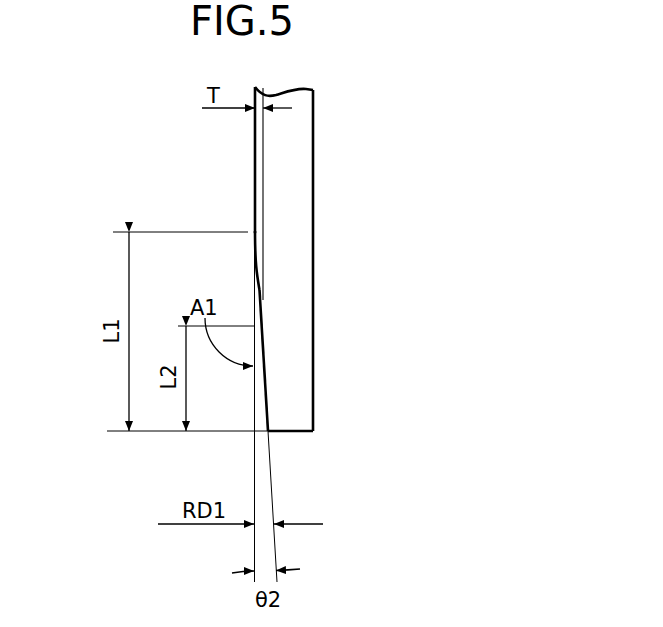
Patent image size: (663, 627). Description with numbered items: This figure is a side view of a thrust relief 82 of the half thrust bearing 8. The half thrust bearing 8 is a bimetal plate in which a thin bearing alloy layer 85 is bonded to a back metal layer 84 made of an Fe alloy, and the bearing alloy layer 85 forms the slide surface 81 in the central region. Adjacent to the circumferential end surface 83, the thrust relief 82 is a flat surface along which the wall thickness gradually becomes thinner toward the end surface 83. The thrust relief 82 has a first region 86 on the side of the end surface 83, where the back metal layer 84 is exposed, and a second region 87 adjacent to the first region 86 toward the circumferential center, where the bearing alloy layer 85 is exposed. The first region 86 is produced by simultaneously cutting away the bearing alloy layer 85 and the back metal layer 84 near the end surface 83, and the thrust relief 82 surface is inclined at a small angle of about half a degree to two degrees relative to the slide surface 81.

The half thrust bearing 8 is at (335, 162).
The slide surface 81 is at (252, 203).
The thrust relief 82 is at (257, 286).
The end surface 83 is at (292, 432).
The back metal layer 84 is at (293, 207).
The bearing alloy layer 85 is at (257, 158).
The first region 86 is at (266, 385).
The second region 87 is at (255, 255).